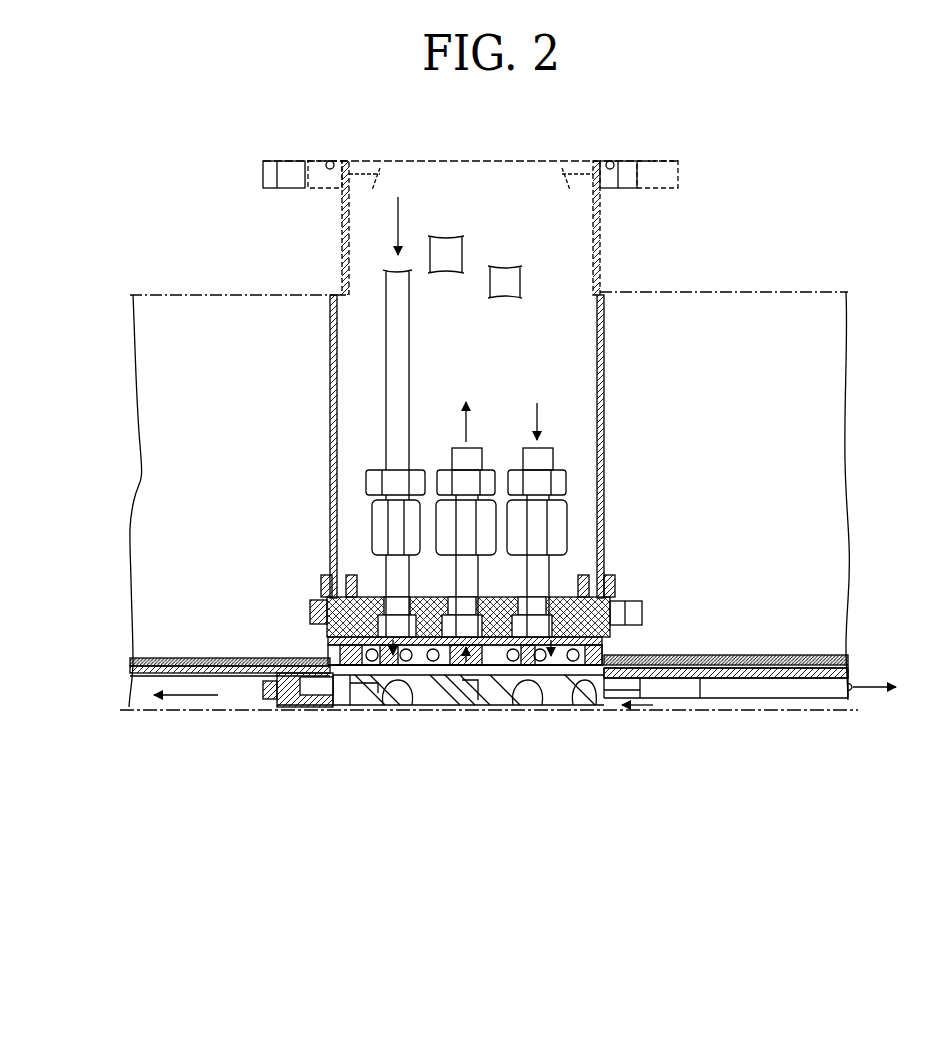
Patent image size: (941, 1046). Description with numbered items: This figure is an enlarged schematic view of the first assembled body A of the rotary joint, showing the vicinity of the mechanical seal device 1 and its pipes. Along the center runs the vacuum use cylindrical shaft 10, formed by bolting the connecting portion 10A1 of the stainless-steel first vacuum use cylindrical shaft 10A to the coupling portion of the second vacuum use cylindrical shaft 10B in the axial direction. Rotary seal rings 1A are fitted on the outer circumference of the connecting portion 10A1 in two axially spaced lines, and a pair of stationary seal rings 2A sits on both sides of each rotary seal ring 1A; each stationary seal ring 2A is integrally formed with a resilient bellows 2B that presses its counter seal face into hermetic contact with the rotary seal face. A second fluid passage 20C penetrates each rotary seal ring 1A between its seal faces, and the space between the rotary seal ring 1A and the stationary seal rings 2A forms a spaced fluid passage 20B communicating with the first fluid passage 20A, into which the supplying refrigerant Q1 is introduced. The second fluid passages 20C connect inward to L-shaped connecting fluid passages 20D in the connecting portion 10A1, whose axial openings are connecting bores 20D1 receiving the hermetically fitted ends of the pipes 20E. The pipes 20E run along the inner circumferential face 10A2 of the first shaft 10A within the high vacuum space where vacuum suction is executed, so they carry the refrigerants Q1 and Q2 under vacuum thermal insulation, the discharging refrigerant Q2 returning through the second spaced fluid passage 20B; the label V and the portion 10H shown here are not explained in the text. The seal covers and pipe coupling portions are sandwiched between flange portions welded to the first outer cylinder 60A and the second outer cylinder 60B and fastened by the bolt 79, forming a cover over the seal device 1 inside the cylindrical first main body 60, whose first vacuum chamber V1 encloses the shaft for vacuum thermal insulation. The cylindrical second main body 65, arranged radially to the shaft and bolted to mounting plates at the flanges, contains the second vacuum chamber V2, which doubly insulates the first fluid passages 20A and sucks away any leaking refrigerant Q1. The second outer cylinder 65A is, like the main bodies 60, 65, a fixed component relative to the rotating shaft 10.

The vacuum use cylindrical shaft 10 is at (152, 680).
The first vacuum use cylindrical shaft 10A is at (348, 690).
The connecting portion 10A1 is at (365, 690).
The inner circumferential face 10A2 is at (713, 672).
The second vacuum use cylindrical shaft 10B is at (277, 677).
The opening 10H is at (807, 703).
The mechanical seal device 1 is at (378, 590).
The rotary seal ring 1A is at (560, 690).
The stationary seal ring 2A is at (620, 600).
The resilient bellows 2B is at (602, 648).
The first fluid passage 20A is at (410, 368).
The spaced fluid passage 20B is at (400, 606).
The second fluid passage 20C is at (600, 580).
The connecting fluid passage 20D is at (402, 716).
The connecting bore 20D1 is at (593, 705).
The pipe 20E is at (757, 690).
The first main body 60 is at (776, 290).
The first outer cylinder 60A is at (738, 655).
The second outer cylinder 60B is at (210, 658).
The second main body 65 is at (610, 500).
The second outer cylinder 65A is at (678, 160).
The bolt 79 is at (312, 597).
The first assembled body A is at (706, 276).
The flow direction V is at (185, 698).
The first vacuum chamber V1 is at (260, 490).
The second vacuum chamber V2 is at (571, 282).
The supplying refrigerant Q1 is at (645, 449).
The discharging refrigerant Q2 is at (484, 411).